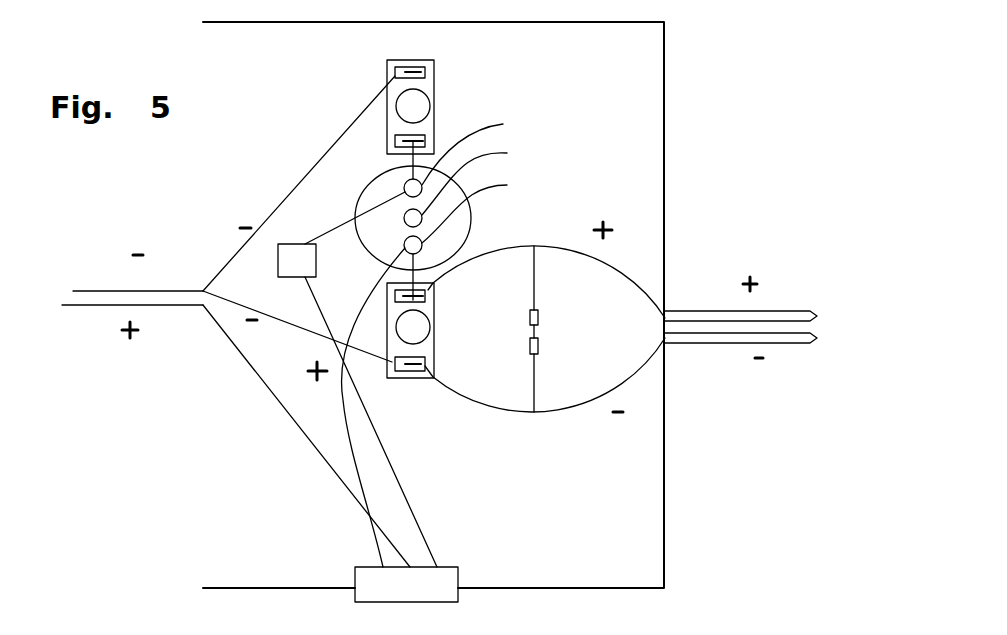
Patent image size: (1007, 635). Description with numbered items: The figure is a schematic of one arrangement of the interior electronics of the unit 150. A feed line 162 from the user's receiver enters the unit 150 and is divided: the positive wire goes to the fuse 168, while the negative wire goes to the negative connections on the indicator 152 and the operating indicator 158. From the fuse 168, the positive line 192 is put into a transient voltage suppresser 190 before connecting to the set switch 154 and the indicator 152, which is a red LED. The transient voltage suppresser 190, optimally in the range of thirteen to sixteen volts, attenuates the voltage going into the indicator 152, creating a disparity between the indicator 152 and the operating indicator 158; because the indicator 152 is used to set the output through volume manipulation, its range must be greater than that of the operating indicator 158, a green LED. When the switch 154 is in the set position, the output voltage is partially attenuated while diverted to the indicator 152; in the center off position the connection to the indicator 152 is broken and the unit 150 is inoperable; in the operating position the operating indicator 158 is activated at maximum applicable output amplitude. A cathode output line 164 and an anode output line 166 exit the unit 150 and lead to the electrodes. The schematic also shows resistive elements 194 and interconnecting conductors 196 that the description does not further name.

The unit 150 is at (704, 76).
The indicator 152 is at (397, 105).
The set switch 154 is at (357, 192).
The operating indicator 158 is at (397, 343).
The feed line 162 is at (126, 281).
The cathode output line 164 is at (695, 318).
The anode output line 166 is at (702, 340).
The fuse 168 is at (447, 585).
The transient voltage suppresser 190 is at (297, 244).
The positive line 192 is at (305, 301).
The resistors 194 is at (563, 272).
The conductors 196 is at (347, 456).